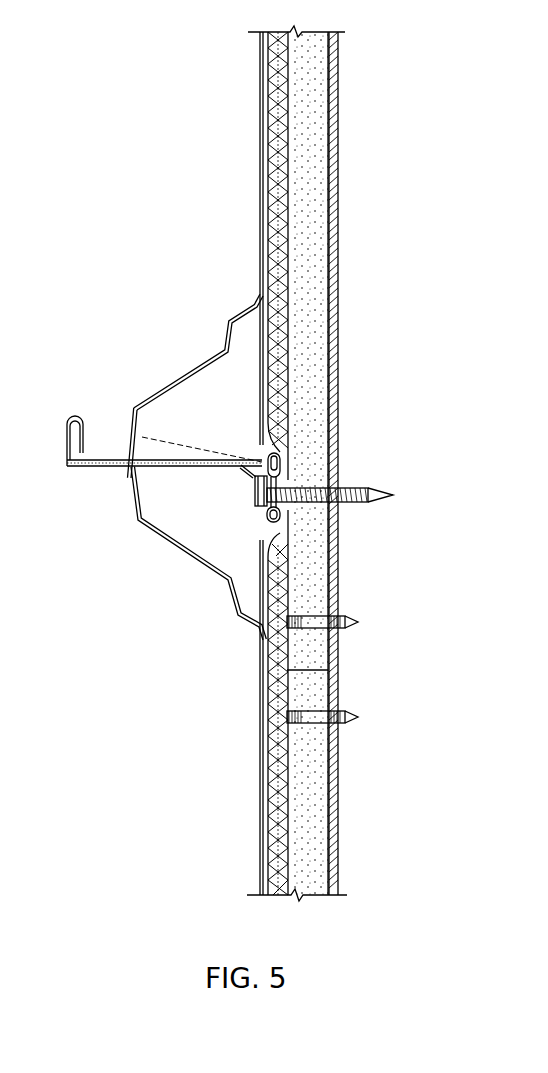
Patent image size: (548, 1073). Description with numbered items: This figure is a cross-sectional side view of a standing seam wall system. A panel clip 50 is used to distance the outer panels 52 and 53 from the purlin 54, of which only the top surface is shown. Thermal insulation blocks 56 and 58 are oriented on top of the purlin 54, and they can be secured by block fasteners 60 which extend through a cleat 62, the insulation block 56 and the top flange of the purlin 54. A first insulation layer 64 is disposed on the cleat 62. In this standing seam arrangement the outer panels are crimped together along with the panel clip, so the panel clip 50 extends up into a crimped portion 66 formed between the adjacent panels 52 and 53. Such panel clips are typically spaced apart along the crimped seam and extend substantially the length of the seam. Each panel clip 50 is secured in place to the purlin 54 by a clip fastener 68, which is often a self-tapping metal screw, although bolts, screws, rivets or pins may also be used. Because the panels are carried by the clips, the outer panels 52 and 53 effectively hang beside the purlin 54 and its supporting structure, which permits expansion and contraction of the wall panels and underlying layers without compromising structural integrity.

The panel clip 50 is at (152, 437).
The outer panel 52 is at (160, 538).
The outer panel 53 is at (198, 368).
The purlin 54 is at (335, 853).
The thermal insulation block 56 is at (312, 782).
The thermal insulation block 58 is at (318, 237).
The block fastener 60 is at (358, 622).
The cleat 62 is at (282, 214).
The first insulation layer 64 is at (275, 742).
The crimped portion 66 is at (80, 478).
The clip fastener 68 is at (357, 505).